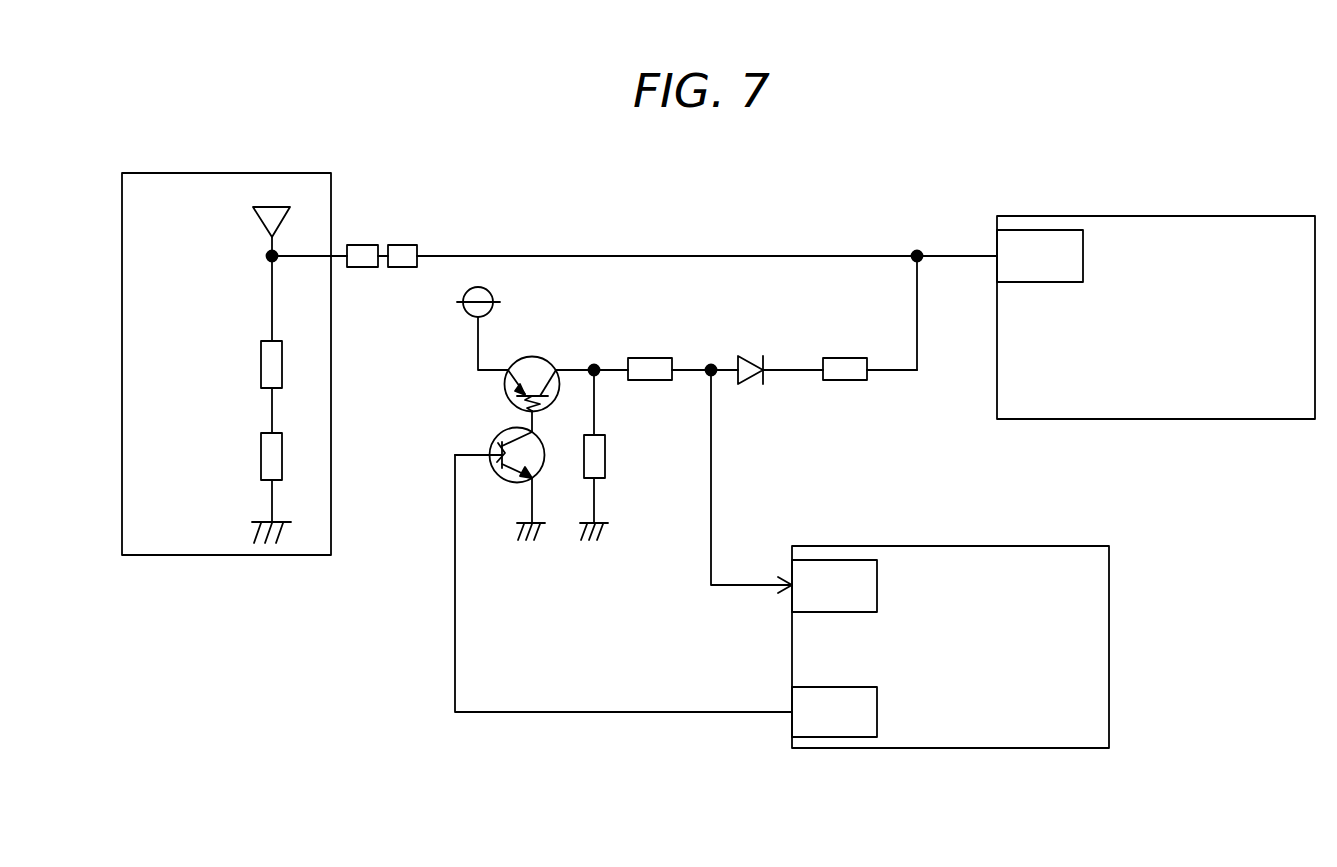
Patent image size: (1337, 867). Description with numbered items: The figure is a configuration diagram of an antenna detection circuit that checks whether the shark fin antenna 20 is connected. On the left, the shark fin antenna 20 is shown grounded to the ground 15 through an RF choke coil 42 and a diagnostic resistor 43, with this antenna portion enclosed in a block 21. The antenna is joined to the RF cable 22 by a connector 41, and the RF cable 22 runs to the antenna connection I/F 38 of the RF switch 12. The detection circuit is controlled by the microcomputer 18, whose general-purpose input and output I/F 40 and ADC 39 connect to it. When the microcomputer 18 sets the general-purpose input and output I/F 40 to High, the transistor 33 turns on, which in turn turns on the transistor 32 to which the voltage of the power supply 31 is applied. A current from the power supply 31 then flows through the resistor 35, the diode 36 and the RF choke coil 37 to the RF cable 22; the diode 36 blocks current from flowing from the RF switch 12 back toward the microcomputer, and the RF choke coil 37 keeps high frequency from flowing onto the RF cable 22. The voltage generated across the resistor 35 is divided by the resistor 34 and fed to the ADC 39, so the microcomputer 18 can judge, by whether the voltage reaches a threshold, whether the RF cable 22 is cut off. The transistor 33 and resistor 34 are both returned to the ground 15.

The RF switch 12 is at (1190, 216).
The ground 15 is at (588, 543).
The microcomputer 18 is at (985, 546).
The shark fin antenna 20 is at (256, 218).
The antenna module 21 is at (242, 173).
The RF cable 22 is at (567, 249).
The power supply 31 is at (470, 318).
The transistor 32 is at (540, 358).
The transistor 33 is at (497, 432).
The resistor 34 is at (605, 456).
The resistor 35 is at (655, 381).
The diode 36 is at (745, 384).
The RF choke coil 37 is at (845, 381).
The antenna connection I/F 38 is at (1083, 277).
The analog-digital controller (ADC) 39 is at (877, 590).
The general-purpose input and output I/F 40 is at (877, 698).
The connector 41 is at (405, 246).
The RF choke coil 42 is at (260, 365).
The diagnostic resistor 43 is at (260, 459).